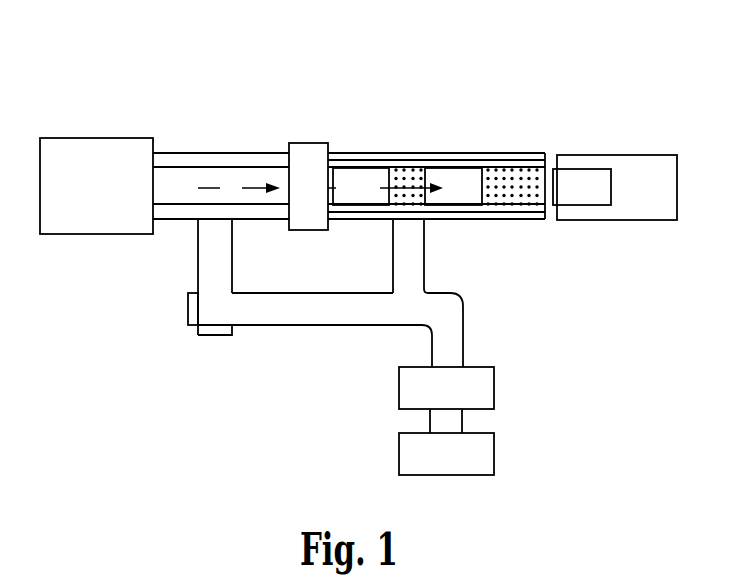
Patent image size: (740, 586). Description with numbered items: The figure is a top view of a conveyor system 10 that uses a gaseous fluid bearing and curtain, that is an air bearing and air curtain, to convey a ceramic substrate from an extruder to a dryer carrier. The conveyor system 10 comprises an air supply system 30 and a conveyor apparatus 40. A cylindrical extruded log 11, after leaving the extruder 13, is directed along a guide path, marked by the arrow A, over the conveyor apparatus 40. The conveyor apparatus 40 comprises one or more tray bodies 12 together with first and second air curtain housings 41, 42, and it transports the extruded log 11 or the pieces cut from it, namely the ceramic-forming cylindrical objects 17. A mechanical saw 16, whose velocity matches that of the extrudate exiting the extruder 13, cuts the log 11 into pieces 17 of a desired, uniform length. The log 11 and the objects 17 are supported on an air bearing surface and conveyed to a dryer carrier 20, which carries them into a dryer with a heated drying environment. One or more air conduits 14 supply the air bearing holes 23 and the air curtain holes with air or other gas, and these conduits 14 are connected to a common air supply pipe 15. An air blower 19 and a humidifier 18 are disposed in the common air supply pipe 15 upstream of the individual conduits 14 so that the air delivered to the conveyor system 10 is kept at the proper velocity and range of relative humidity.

The conveyor system 10 is at (175, 366).
The extruded log 11 is at (186, 200).
The tray body 12 is at (217, 153).
The extruder 13 is at (97, 138).
The air conduit 14 is at (197, 233).
The common air supply pipe 15 is at (325, 323).
The mechanical saw 16 is at (305, 143).
The cylindrical object 17 is at (371, 200).
The humidifier 18 is at (494, 384).
The air blower 19 is at (494, 451).
The dryer carrier 20 is at (585, 155).
The air bearing holes 23 is at (513, 167).
The air supply system 30 is at (608, 295).
The conveyor apparatus 40 is at (274, 68).
The first air curtain housing 41 is at (470, 157).
The second air curtain housing 42 is at (477, 205).